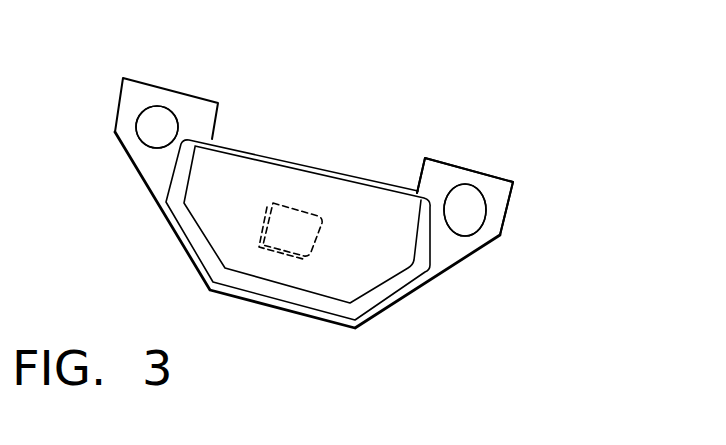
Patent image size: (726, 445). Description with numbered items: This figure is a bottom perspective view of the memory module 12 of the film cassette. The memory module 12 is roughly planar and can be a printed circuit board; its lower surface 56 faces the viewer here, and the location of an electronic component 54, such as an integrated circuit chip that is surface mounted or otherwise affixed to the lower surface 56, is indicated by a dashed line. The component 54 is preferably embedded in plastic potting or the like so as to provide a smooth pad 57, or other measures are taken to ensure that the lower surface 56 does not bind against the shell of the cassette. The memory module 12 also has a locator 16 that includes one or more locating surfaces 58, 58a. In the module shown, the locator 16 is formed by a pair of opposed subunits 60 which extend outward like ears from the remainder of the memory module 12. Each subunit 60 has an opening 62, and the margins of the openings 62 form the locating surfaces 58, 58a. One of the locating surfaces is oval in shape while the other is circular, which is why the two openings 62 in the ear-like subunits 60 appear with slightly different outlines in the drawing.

The memory module 12 is at (357, 101).
The locator 16 is at (137, 79).
The subunit 60 is at (481, 251).
The lower surface 56 is at (437, 170).
The smooth pad 57 is at (373, 273).
The locating surface 58 is at (136, 128).
The mounting hole 58a is at (483, 194).
The opening 62 is at (158, 116).
The electronic component 54 is at (266, 229).